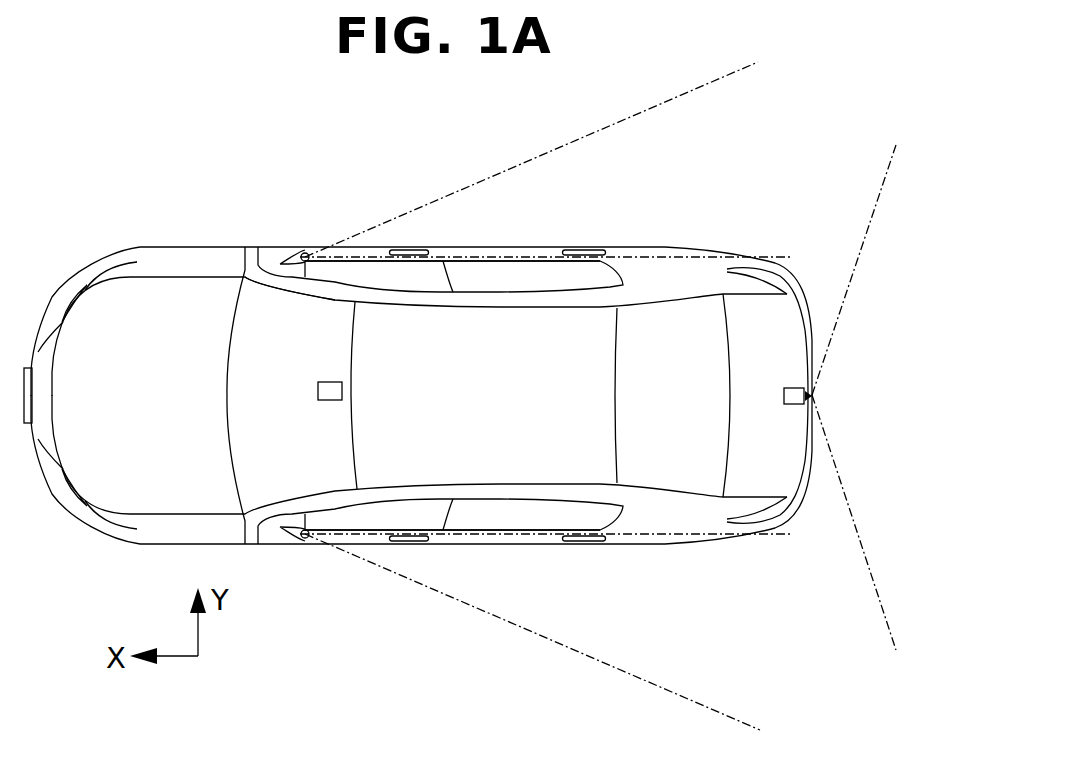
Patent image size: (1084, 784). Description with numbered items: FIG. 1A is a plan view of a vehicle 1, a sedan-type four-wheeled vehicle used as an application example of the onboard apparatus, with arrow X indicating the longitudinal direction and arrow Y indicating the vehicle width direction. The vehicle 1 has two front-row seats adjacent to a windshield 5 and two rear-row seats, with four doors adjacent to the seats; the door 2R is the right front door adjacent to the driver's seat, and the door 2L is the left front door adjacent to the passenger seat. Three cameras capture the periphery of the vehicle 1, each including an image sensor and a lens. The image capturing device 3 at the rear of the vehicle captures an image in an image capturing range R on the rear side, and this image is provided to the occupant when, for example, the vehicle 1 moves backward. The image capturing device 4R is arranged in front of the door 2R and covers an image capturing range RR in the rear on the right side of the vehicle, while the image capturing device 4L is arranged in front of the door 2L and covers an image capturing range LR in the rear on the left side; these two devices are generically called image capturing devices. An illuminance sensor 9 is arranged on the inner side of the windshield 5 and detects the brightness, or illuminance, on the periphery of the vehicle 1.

The vehicle 1 is at (185, 180).
The door 2R is at (387, 278).
The door 2L is at (360, 527).
The image capturing device 3 is at (789, 404).
The image capturing device 4R is at (305, 252).
The image capturing device 4L is at (305, 540).
The windshield 5 is at (257, 307).
The illuminance sensor 9 is at (342, 390).
The image capturing range RR is at (498, 172).
The image capturing range LR is at (472, 611).
The image capturing range R is at (876, 206).